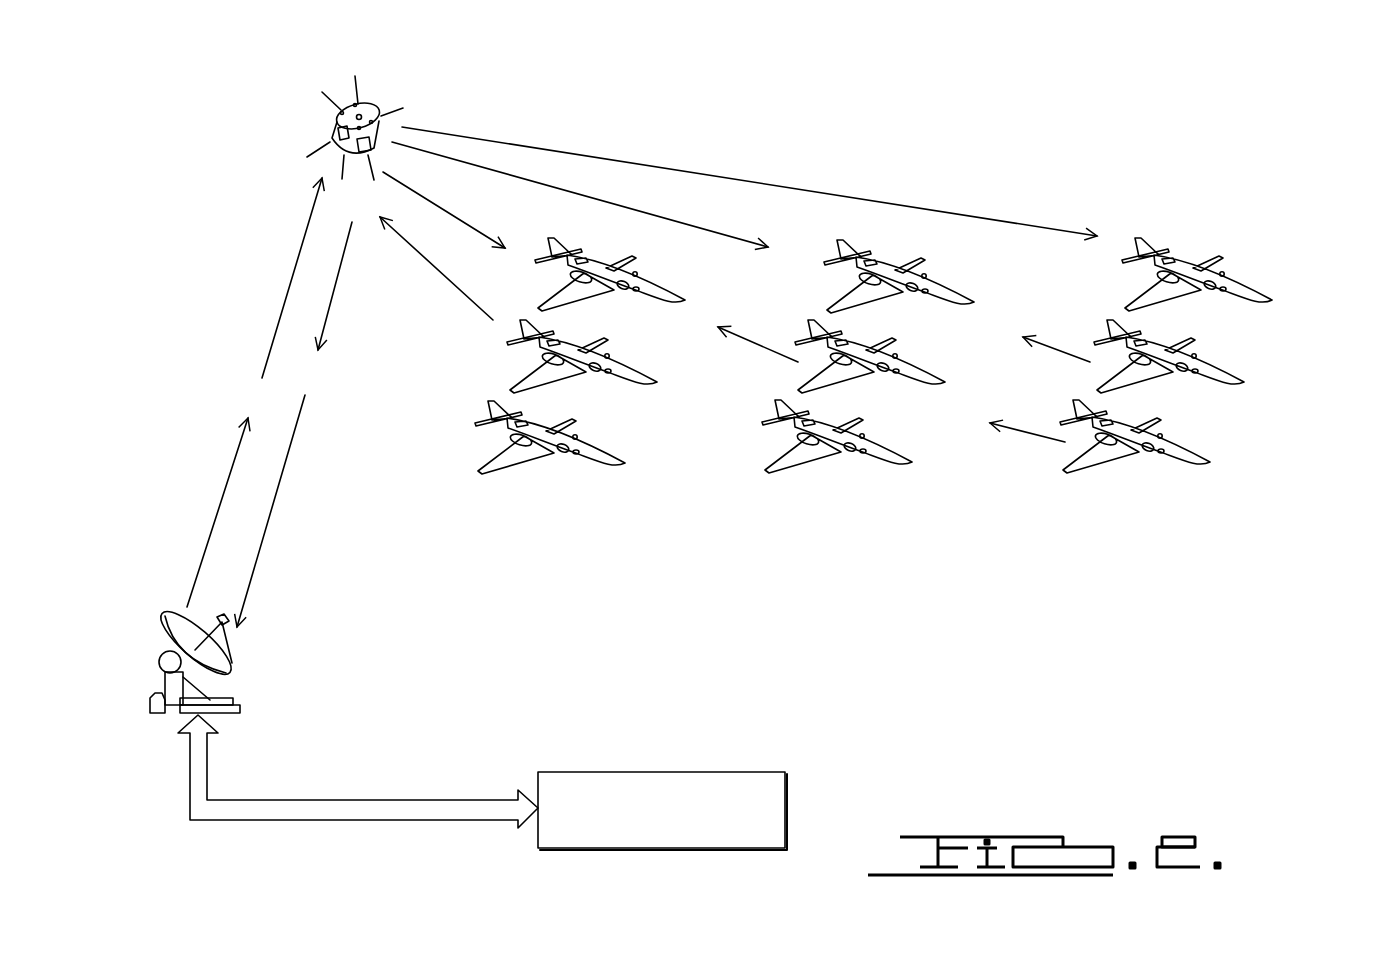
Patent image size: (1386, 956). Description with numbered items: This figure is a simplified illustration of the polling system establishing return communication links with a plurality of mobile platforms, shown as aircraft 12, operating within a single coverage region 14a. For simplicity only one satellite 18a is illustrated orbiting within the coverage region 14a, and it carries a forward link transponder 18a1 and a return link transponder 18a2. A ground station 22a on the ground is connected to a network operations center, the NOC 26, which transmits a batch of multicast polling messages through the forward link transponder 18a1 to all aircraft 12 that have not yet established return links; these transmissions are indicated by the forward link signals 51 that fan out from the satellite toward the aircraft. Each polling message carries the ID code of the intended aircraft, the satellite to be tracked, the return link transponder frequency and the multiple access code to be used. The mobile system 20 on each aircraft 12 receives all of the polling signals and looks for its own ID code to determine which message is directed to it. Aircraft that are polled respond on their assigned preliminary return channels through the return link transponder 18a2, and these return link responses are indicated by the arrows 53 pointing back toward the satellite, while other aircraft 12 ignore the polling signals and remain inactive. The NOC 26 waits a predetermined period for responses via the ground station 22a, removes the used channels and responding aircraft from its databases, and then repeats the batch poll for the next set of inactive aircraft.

The aircraft 12 is at (688, 299).
The mobile system 20 is at (634, 272).
The satellite 18a is at (300, 120).
The forward link transponder 18a1 is at (337, 135).
The return link transponder 18a2 is at (363, 157).
The forward link signals 51 is at (678, 170).
The return link responses 53 is at (460, 292).
The ground station 22a is at (258, 678).
The NOC 26 is at (650, 778).
The coverage region 14a is at (922, 644).